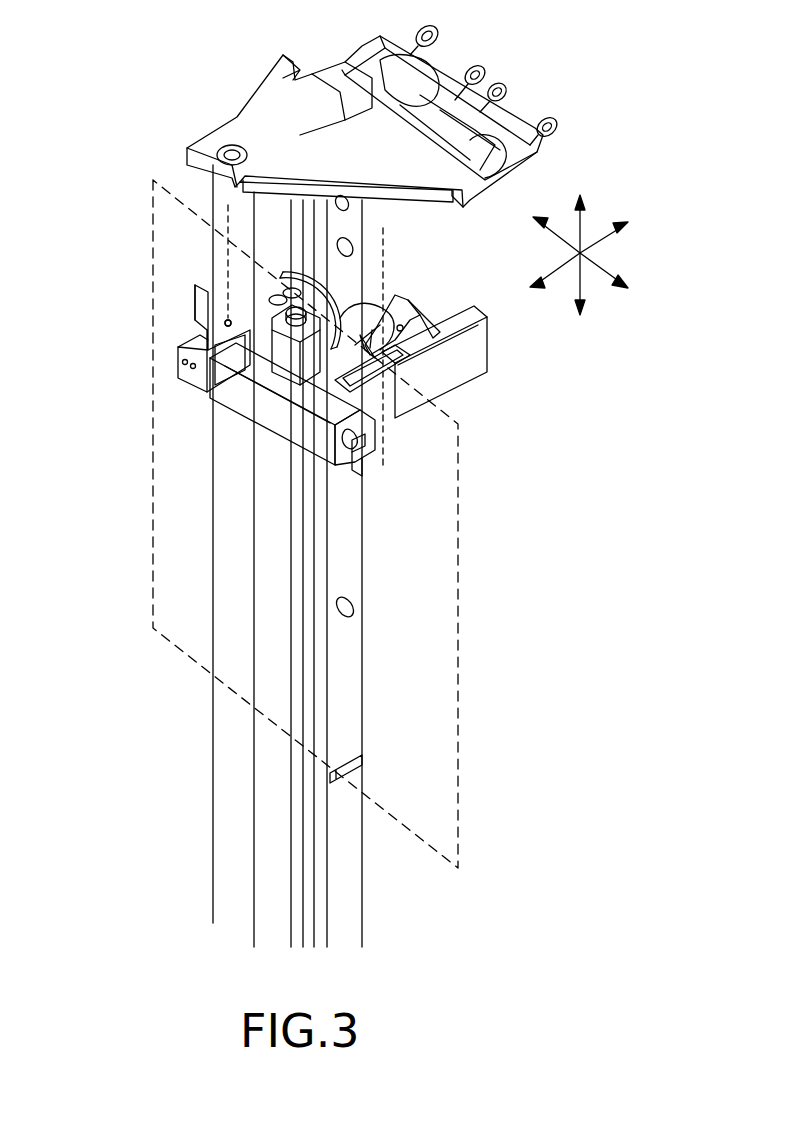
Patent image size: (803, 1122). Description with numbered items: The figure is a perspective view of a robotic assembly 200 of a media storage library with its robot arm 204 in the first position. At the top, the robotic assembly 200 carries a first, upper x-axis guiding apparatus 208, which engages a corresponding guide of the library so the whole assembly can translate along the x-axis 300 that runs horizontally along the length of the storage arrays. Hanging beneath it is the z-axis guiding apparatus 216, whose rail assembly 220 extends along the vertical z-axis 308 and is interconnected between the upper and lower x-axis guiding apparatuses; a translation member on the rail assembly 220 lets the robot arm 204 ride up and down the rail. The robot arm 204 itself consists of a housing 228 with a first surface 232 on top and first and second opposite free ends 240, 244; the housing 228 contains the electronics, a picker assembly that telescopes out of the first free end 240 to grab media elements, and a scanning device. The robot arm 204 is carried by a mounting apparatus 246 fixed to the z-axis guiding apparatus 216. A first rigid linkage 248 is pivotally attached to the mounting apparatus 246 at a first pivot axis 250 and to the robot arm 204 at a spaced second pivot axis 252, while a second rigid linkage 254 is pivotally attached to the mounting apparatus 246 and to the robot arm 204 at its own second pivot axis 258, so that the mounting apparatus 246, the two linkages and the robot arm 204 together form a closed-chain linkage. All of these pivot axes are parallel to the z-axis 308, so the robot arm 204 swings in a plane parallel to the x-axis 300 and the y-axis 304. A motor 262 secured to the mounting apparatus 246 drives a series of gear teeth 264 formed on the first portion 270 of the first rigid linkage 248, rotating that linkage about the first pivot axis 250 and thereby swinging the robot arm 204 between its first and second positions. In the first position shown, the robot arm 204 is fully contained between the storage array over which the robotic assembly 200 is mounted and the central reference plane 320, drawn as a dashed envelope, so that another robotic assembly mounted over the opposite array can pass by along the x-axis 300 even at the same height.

The robotic assembly 200 is at (150, 82).
The robot arm 204 is at (497, 383).
The first x-axis guiding apparatus 208 is at (535, 104).
The z-axis guiding apparatus 216 is at (198, 766).
The rail assembly 220 is at (213, 732).
The housing 228 is at (405, 410).
The first surface 232 is at (420, 352).
The first free end 240 is at (490, 345).
The second free end 244 is at (283, 437).
The mounting apparatus 246 is at (160, 360).
The first rigid linkage 248 is at (398, 410).
The first pivot axis 250 is at (227, 248).
The second pivot axis 252 is at (383, 238).
The second rigid linkage 254 is at (362, 452).
The second pivot axis 258 is at (362, 558).
The motor 262 is at (290, 364).
The gear teeth 264 is at (283, 275).
The first portion 270 is at (395, 322).
The x-axis 300 is at (606, 290).
The y-axis 304 is at (623, 236).
The z-axis 308 is at (586, 218).
The central reference plane 320 is at (153, 578).